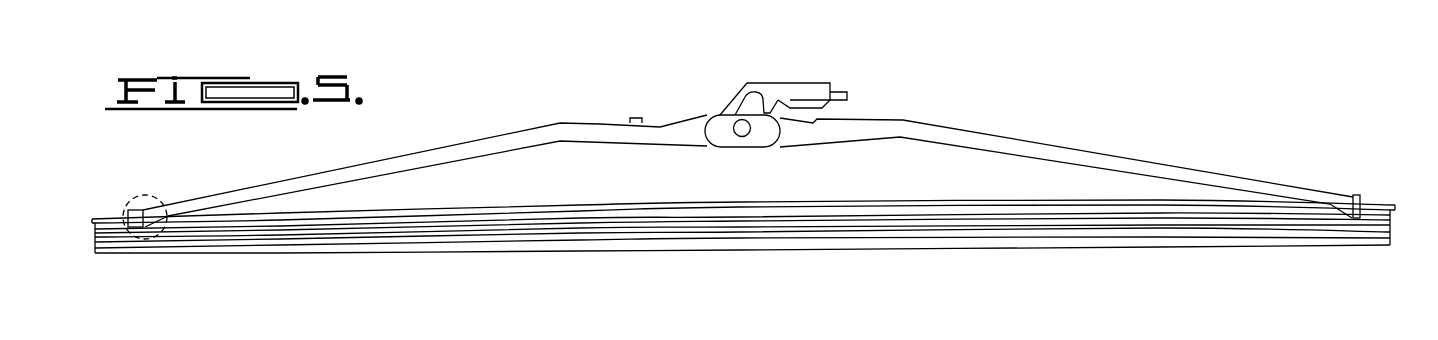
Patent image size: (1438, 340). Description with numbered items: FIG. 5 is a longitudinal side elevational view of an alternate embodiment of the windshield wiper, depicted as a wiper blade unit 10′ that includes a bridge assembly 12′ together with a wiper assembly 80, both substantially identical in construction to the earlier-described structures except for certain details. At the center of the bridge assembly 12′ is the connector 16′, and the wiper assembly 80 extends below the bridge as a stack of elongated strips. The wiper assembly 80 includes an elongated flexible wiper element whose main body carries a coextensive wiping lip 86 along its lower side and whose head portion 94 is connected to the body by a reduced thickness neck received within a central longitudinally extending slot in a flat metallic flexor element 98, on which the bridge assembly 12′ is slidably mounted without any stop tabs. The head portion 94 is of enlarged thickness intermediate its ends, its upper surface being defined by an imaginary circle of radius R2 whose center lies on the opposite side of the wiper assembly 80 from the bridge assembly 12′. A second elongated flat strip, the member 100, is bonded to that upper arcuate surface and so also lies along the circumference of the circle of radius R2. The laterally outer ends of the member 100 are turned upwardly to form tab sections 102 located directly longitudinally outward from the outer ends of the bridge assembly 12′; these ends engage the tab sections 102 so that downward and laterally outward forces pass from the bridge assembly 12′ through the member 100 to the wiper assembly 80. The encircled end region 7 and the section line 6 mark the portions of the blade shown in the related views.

The end clip of wiper arm (left) 7 is at (152, 195).
The wiper blade unit 10′ is at (1023, 133).
The bridge assembly 12′ is at (577, 118).
The connector / pivot block 16′ is at (797, 82).
The wiper assembly 80 is at (920, 192).
The wiping lip 86 is at (573, 253).
The head portion 94 is at (637, 212).
The flexor element 98 is at (375, 222).
The member 100 is at (533, 200).
The tab sections 102 is at (1362, 196).
The section line 6- 6 is at (732, 187).
The radius R2 is at (890, 207).